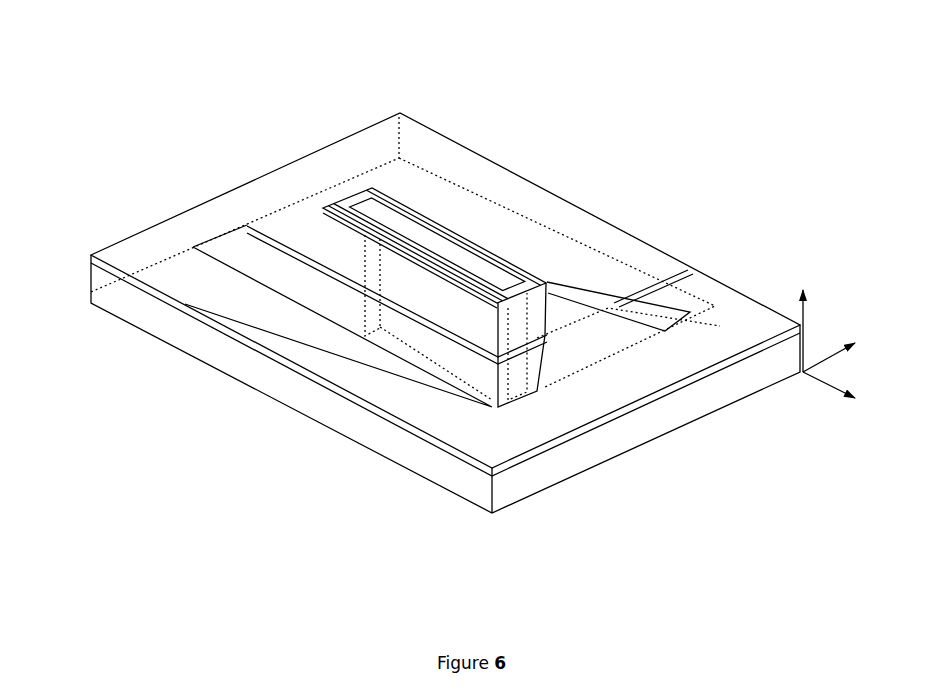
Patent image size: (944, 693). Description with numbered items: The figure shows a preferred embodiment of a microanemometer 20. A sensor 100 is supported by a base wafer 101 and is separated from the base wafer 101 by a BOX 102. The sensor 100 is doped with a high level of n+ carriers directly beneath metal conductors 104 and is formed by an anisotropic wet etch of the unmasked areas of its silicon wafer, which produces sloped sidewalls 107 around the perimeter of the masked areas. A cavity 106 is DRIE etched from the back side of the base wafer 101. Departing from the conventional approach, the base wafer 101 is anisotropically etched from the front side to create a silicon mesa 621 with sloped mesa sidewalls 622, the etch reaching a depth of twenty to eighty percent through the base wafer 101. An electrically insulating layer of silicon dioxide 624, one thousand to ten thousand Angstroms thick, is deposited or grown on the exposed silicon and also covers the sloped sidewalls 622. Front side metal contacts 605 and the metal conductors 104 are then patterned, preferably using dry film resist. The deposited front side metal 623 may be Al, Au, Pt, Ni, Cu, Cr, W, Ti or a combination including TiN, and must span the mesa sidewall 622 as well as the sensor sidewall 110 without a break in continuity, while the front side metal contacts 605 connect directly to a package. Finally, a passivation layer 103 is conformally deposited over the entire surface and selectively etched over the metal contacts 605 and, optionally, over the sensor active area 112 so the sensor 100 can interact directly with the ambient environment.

The microanemometer 20 is at (723, 250).
The sensor 100 is at (358, 189).
The base wafer 101 is at (118, 305).
The BOX 102 is at (480, 357).
The passivation layer 103 is at (667, 258).
The metal conductors 104 is at (543, 278).
The cavity 106 is at (427, 348).
The sloped sidewalls 107 is at (345, 224).
The sensor sidewall 110 is at (548, 279).
The sensor active area 112 is at (415, 222).
The front side metal contacts 605 is at (178, 226).
The silicon mesa 621 is at (284, 217).
The mesa sidewalls 622 is at (333, 303).
The front side metal 623 is at (595, 343).
The silicon dioxide layer 624 is at (447, 453).